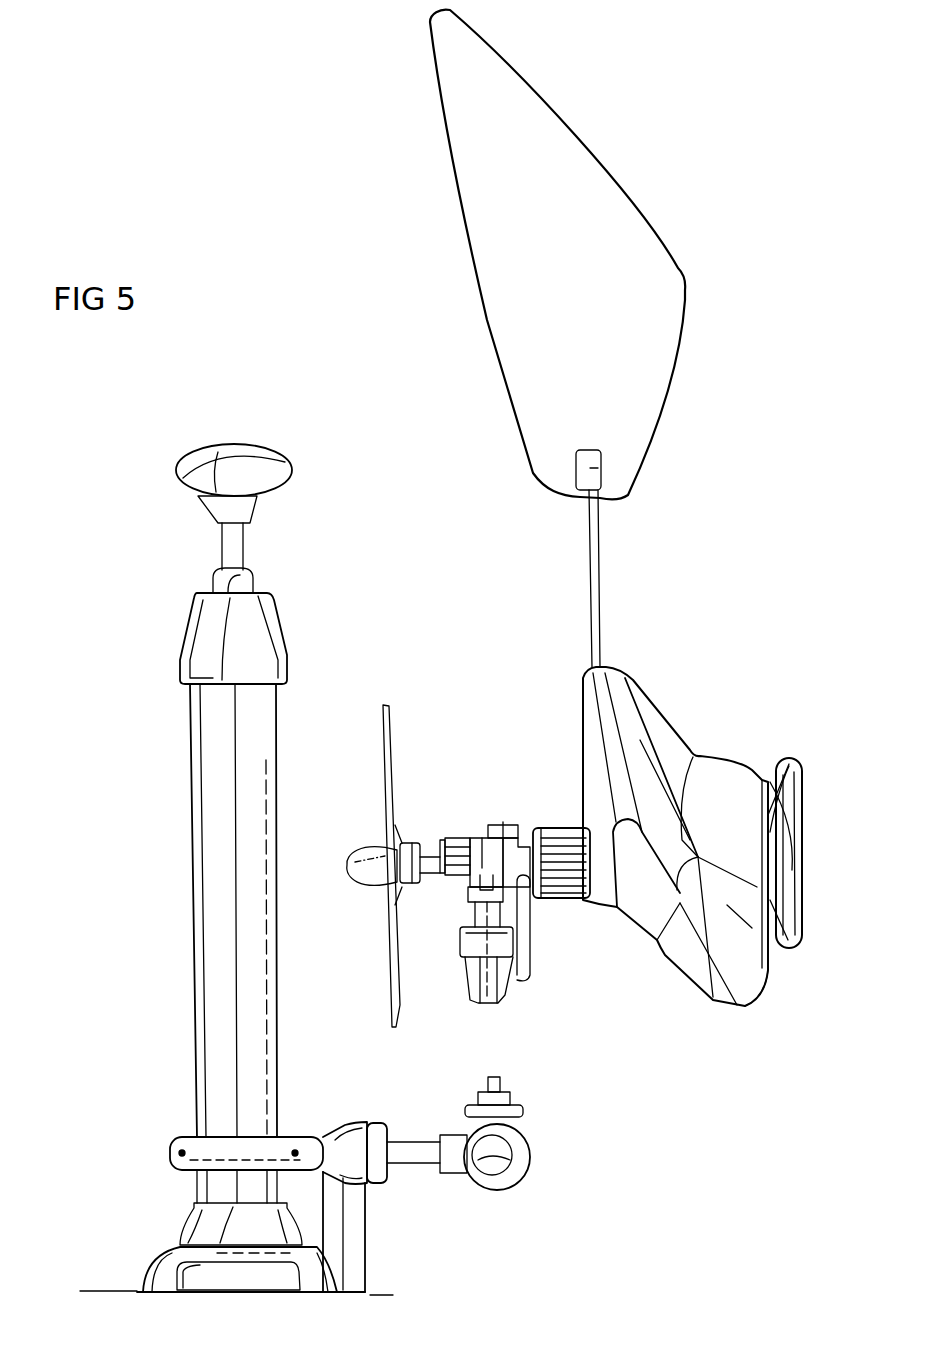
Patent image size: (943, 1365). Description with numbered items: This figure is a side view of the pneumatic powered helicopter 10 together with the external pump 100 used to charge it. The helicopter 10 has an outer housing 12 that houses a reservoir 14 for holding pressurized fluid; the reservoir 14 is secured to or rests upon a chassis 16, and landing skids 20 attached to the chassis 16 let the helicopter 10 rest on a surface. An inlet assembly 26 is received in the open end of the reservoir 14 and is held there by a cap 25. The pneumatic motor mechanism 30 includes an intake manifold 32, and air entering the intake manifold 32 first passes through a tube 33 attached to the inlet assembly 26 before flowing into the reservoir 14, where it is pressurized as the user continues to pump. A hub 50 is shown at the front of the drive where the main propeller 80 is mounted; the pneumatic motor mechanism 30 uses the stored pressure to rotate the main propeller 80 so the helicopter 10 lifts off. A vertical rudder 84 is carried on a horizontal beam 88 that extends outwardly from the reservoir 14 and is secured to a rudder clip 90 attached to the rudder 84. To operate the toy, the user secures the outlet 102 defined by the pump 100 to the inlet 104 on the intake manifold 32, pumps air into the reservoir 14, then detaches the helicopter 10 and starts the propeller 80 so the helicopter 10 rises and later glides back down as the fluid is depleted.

The helicopter 10 is at (544, 681).
The outer housing 12 is at (668, 732).
The reservoir 14 is at (784, 883).
The chassis 16 is at (775, 985).
The landing skids 20 is at (788, 760).
The cap 25 is at (560, 840).
The inlet assembly 26 is at (525, 825).
The pneumatic motor mechanism 30 is at (468, 835).
The intake manifold 32 is at (466, 999).
The tube 33 is at (535, 955).
The hub 50 is at (420, 840).
The main propeller 80 is at (388, 838).
The vertical rudder 84 is at (507, 340).
The horizontal beam 88 is at (589, 600).
The rudder clip 90 is at (585, 466).
The external pump 100 is at (172, 751).
The outlet 102 is at (502, 1080).
The inlet 104 is at (490, 1005).